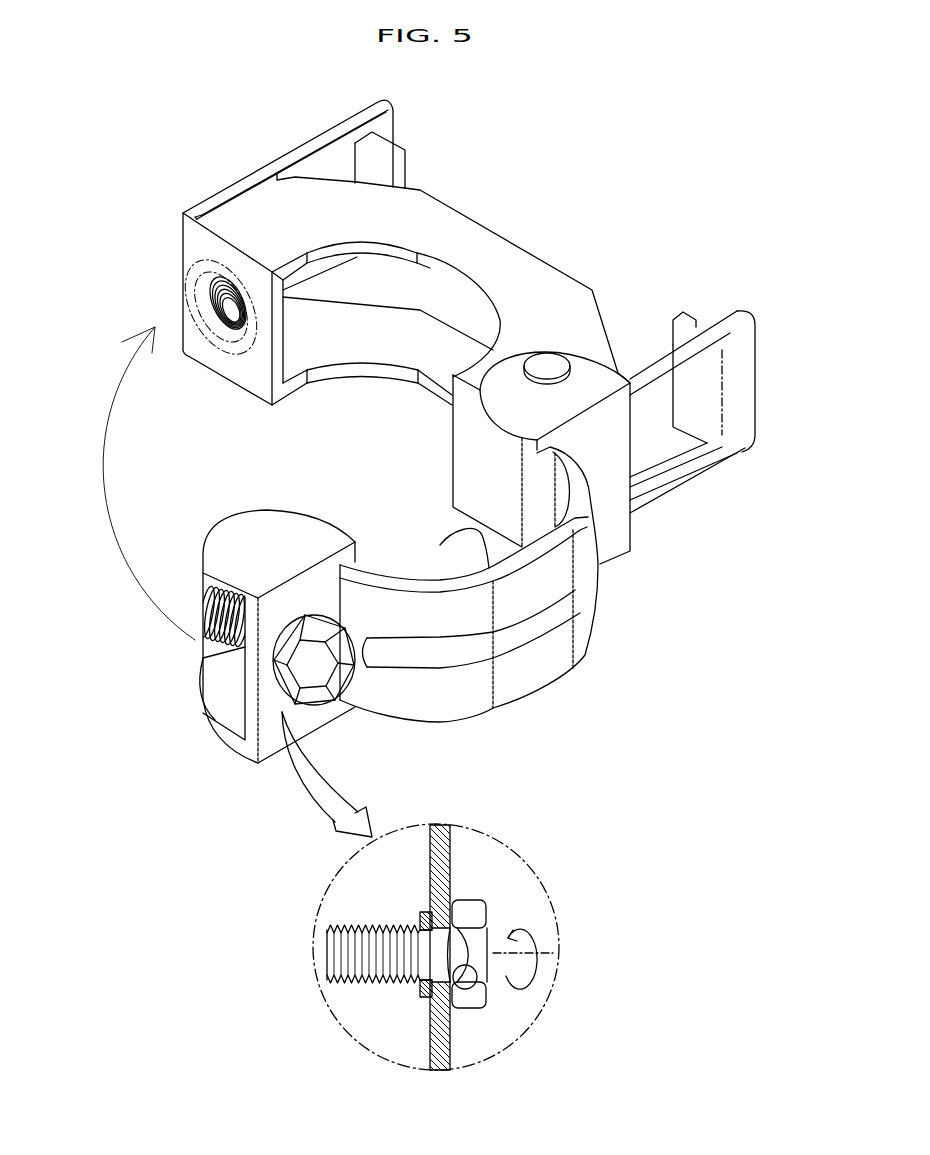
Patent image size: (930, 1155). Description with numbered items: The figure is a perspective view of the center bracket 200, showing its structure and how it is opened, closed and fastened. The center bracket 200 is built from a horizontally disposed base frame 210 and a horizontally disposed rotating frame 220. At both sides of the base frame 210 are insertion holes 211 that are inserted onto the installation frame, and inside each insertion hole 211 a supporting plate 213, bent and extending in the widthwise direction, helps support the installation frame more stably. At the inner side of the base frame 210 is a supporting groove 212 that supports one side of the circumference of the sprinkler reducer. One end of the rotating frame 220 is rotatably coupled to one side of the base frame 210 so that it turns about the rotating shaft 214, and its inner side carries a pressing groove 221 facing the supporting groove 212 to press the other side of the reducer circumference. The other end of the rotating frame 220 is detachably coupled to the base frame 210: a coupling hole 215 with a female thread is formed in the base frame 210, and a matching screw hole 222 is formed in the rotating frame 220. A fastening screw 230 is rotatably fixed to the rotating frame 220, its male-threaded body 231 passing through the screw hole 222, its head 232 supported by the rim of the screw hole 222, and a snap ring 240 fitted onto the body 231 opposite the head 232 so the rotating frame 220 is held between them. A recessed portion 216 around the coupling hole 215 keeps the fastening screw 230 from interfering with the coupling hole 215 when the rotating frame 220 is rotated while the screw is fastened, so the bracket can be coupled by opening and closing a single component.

The center bracket 200 is at (164, 171).
The base frame 210 is at (577, 293).
The insertion hole 211 is at (334, 176).
The supporting groove 212 is at (447, 285).
The supporting plate 213 is at (407, 168).
The rotating shaft 214 is at (552, 363).
The coupling hole 215 is at (217, 310).
The recessed portion 216 is at (210, 277).
The rotating frame 220 is at (538, 670).
The pressing groove 221 is at (457, 577).
The screw hole 222 is at (468, 988).
The fastening screw 230 is at (322, 702).
The body 231 is at (233, 647).
The head 232 is at (290, 660).
The snap ring 240 is at (422, 988).